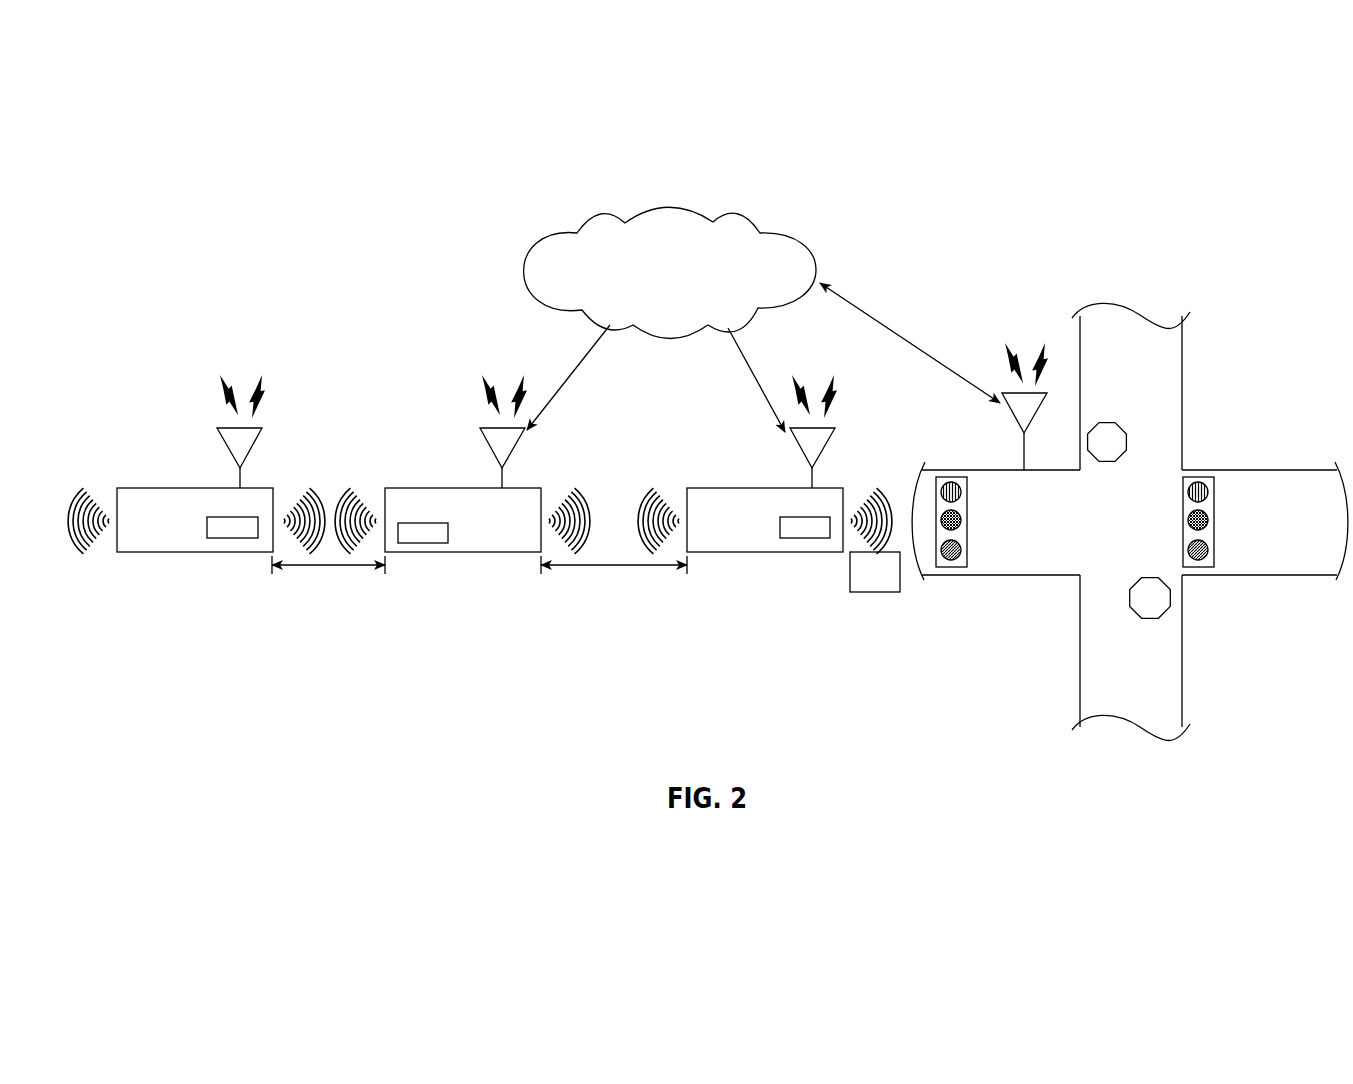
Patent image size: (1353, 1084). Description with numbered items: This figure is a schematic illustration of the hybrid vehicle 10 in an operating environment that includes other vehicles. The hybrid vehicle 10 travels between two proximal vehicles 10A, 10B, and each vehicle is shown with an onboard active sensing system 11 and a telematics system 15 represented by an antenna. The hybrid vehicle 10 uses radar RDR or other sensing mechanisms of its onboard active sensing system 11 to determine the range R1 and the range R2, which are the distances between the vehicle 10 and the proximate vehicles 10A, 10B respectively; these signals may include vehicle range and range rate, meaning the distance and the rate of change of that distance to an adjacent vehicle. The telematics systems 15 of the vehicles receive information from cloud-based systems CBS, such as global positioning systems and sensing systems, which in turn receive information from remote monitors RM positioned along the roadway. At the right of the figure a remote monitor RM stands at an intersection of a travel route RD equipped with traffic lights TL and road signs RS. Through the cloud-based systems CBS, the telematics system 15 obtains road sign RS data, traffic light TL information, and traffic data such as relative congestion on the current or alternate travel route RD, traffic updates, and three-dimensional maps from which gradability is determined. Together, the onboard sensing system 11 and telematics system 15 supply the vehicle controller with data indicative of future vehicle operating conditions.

The cloud-based systems CBS is at (807, 237).
The hybrid vehicle 10 is at (465, 553).
The proximal vehicle 10A is at (767, 553).
The proximal vehicle 10B is at (172, 553).
The onboard active sensing system 11 is at (232, 540).
The telematics system 15 is at (214, 446).
The radar RDR is at (87, 498).
The range R1 is at (613, 567).
The range R2 is at (328, 567).
The road sign RS is at (875, 592).
The remote monitor RM is at (1012, 413).
The travel route RD is at (1078, 568).
The traffic light TL is at (968, 538).